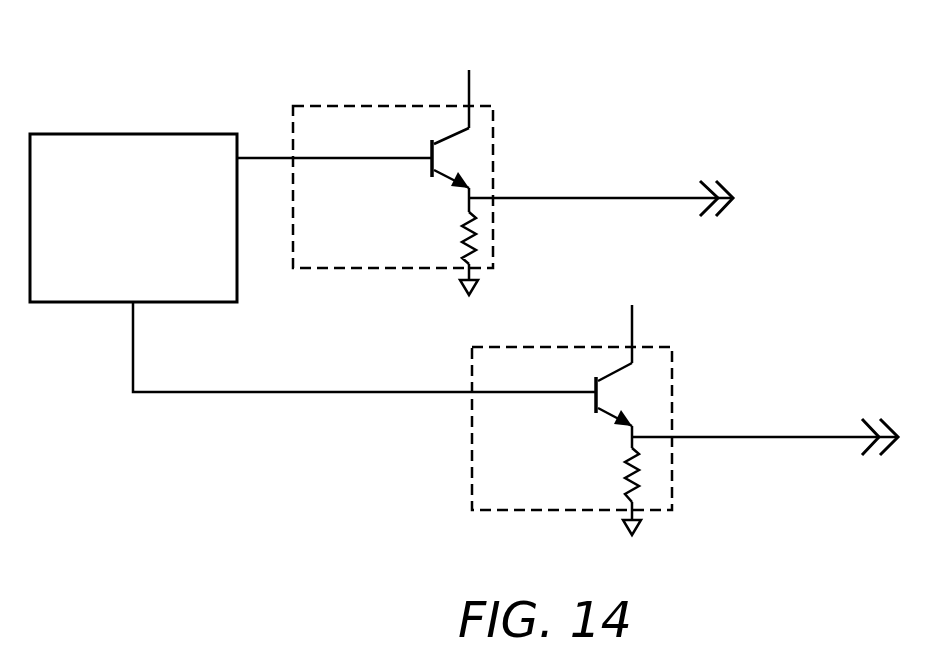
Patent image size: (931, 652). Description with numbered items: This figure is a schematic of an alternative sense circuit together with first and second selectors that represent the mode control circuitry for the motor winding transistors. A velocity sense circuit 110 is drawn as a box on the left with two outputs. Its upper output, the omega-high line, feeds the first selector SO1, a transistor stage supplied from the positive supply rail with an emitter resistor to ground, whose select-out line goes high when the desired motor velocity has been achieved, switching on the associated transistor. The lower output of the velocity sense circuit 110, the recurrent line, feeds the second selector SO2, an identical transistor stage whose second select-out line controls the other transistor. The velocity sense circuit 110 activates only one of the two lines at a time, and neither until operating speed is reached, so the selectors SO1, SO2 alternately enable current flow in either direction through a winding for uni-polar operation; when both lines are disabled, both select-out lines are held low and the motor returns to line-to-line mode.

The velocity sense circuit 110 is at (133, 196).
The first selector SO1 is at (485, 186).
The second selector SO2 is at (515, 421).